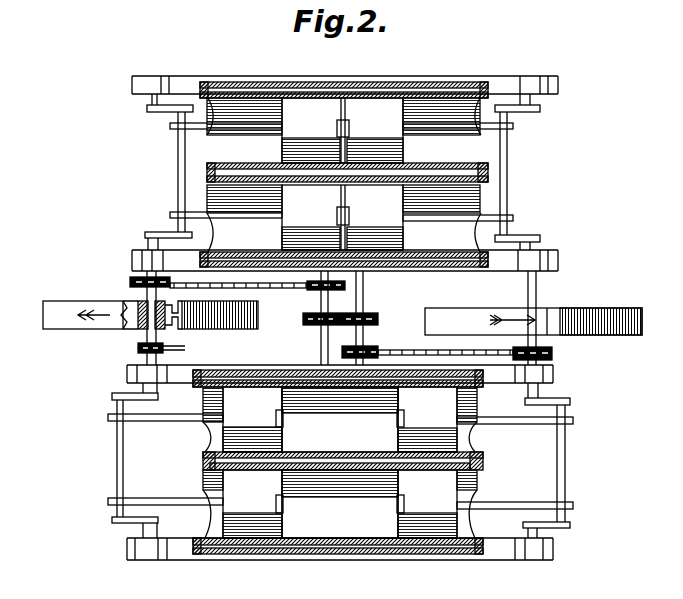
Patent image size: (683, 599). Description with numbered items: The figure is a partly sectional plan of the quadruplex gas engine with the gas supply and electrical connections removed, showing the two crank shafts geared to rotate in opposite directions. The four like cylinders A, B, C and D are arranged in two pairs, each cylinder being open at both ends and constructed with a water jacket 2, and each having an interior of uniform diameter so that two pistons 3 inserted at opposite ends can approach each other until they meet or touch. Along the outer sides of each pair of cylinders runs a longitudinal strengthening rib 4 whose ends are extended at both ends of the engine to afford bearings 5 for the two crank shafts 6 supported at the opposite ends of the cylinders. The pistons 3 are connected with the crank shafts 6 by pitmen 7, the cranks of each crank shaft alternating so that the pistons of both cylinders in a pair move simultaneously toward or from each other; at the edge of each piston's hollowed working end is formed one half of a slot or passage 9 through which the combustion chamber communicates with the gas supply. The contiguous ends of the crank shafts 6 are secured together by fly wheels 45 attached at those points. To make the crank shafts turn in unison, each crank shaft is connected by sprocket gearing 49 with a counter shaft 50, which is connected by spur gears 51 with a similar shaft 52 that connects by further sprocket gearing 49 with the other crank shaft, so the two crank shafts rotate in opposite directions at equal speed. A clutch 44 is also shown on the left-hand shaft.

The water jacket 2 is at (432, 83).
The pistons 3 is at (310, 136).
The longitudinal strengthening rib 4 is at (238, 75).
The bearings 5 is at (157, 76).
The crank shafts 6 is at (177, 183).
The pitmen 7 is at (232, 131).
The slot or passage 9 is at (337, 130).
The clutch 44 is at (168, 350).
The fly wheels 45 is at (43, 318).
The sprocket gearing 49 is at (285, 288).
The counter shaft 50 is at (364, 297).
The spur gears 51 is at (346, 311).
The shaft 52 is at (321, 350).
The cylinder A is at (253, 149).
The cylinder B is at (257, 239).
The cylinder C is at (334, 421).
The cylinder D is at (335, 505).